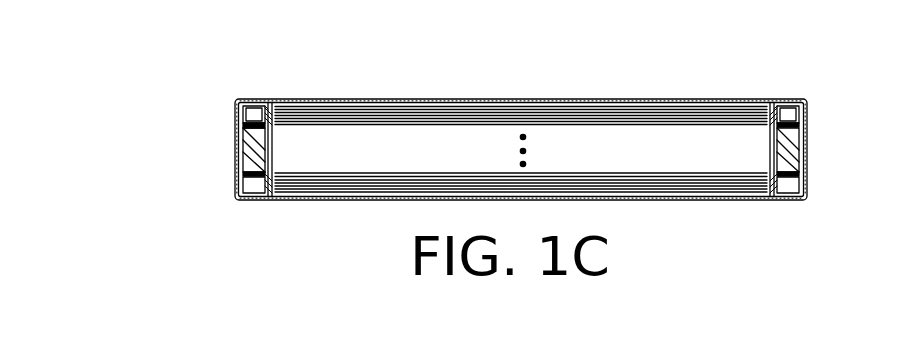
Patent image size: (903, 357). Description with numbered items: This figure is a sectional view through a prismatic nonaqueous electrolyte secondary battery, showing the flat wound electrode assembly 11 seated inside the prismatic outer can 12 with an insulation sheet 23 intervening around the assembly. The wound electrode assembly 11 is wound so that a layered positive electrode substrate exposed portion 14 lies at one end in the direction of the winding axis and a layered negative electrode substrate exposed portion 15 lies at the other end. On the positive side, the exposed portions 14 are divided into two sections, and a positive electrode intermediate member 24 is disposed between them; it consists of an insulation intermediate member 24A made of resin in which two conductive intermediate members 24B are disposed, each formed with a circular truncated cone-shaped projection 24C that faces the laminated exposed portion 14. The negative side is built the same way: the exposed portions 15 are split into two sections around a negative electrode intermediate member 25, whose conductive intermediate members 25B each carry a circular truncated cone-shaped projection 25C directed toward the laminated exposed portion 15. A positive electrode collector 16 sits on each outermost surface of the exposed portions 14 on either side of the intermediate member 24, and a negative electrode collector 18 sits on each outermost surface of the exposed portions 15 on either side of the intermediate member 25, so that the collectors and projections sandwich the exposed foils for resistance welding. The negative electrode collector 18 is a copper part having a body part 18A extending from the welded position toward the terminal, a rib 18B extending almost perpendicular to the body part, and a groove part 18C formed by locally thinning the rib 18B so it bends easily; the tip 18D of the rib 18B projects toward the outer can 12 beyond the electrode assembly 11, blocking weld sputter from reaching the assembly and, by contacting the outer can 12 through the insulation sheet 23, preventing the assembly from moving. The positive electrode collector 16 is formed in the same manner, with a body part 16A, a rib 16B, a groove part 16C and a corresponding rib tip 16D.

The flat wound electrode assembly 11 is at (722, 165).
The prismatic outer can 12 is at (658, 197).
The positive electrode substrate exposed portion 14 is at (277, 197).
The negative electrode substrate exposed portion 15 is at (772, 192).
The positive electrode collector 16 is at (258, 192).
The body part 16A is at (243, 108).
The rib 16B is at (270, 110).
The groove part 16C is at (263, 112).
The left connector lower cavity 16D is at (263, 193).
The negative electrode collector 18 is at (780, 186).
The body part 18A is at (788, 105).
The rib 18B is at (768, 110).
The groove part 18C is at (780, 108).
The tip 18D is at (778, 193).
The insulation sheet 23 is at (452, 100).
The positive electrode intermediate member 24 is at (246, 152).
The insulation intermediate member 24A is at (243, 122).
The conductive intermediate member 24B is at (245, 133).
The circular truncated cone-shaped projection 24C is at (247, 172).
The negative electrode intermediate member 25 is at (803, 145).
The conductive intermediate member 25B is at (800, 132).
The circular truncated cone-shaped projection 25C is at (797, 177).